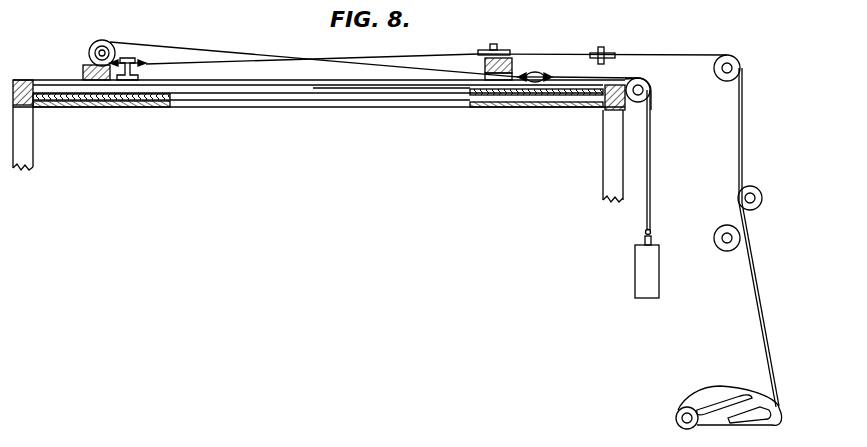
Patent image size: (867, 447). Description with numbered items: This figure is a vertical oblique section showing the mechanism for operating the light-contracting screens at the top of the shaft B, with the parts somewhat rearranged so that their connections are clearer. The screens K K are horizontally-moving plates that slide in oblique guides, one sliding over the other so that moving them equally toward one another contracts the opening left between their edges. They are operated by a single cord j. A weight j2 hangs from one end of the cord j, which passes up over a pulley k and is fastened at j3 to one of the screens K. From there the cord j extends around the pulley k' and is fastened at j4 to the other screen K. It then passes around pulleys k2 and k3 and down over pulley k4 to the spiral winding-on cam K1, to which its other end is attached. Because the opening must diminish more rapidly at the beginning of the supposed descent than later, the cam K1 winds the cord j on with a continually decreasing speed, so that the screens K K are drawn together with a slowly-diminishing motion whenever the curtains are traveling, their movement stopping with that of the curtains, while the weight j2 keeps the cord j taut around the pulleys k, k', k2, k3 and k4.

The shaft B is at (319, 141).
The screens K is at (170, 101).
The spiral winding-on cam K1 is at (729, 416).
The pulley k' is at (94, 56).
The pulley k is at (644, 94).
The pulley k2 is at (503, 53).
The pulley k3 is at (594, 53).
The pulley k4 is at (745, 55).
The cord j is at (466, 55).
The weight j2 is at (668, 277).
The fastening j3 is at (544, 66).
The fastening j4 is at (116, 62).